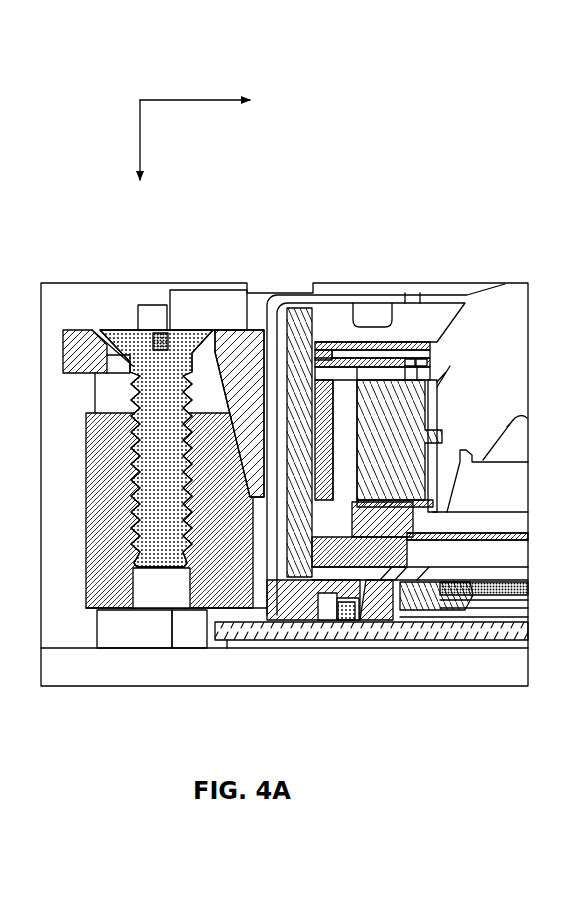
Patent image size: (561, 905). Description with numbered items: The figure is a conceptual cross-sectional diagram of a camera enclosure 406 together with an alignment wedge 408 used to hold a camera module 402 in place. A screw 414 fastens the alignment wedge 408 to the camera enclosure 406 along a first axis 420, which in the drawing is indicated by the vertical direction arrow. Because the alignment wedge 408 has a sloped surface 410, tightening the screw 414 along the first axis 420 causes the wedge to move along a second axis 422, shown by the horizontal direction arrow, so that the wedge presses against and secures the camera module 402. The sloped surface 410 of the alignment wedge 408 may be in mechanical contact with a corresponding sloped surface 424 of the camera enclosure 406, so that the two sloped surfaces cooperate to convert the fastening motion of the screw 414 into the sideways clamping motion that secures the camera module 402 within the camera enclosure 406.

The camera module 402 is at (332, 313).
The camera enclosure 406 is at (227, 290).
The alignment wedge 408 is at (92, 330).
The sloped surface 410 is at (227, 500).
The screw 414 is at (177, 330).
The first axis 420 is at (143, 152).
The second axis 422 is at (189, 100).
The sloped surface 424 is at (248, 383).